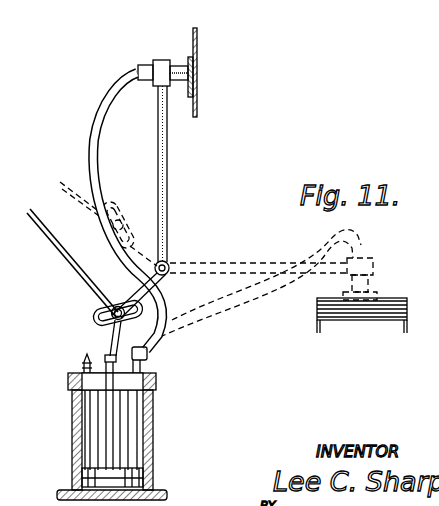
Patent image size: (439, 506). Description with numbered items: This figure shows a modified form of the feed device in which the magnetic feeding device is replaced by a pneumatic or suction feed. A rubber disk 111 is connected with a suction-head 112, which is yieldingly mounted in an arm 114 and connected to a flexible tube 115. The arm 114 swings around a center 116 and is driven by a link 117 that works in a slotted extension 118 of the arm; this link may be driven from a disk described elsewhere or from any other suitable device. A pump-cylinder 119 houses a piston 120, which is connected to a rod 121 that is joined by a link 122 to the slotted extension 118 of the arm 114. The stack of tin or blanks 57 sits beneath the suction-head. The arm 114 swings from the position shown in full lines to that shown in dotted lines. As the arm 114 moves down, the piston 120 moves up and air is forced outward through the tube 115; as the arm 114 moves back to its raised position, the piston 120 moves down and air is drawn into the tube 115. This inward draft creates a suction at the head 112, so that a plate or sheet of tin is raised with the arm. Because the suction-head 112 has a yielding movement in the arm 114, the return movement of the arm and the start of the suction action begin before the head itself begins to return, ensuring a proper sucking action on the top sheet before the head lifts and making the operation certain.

The rubber disk 111 is at (197, 32).
The suction-head 112 is at (180, 77).
The arm 114 is at (168, 189).
The flexible tube 115 is at (100, 157).
The center 116 is at (168, 262).
The link 117 is at (70, 260).
The slotted extension 118 is at (100, 322).
The pump-cylinder 119 is at (157, 433).
The piston 120 is at (123, 472).
The rod 121 is at (110, 438).
The link 122 is at (102, 357).
The stack of tin or blanks 57 is at (407, 307).